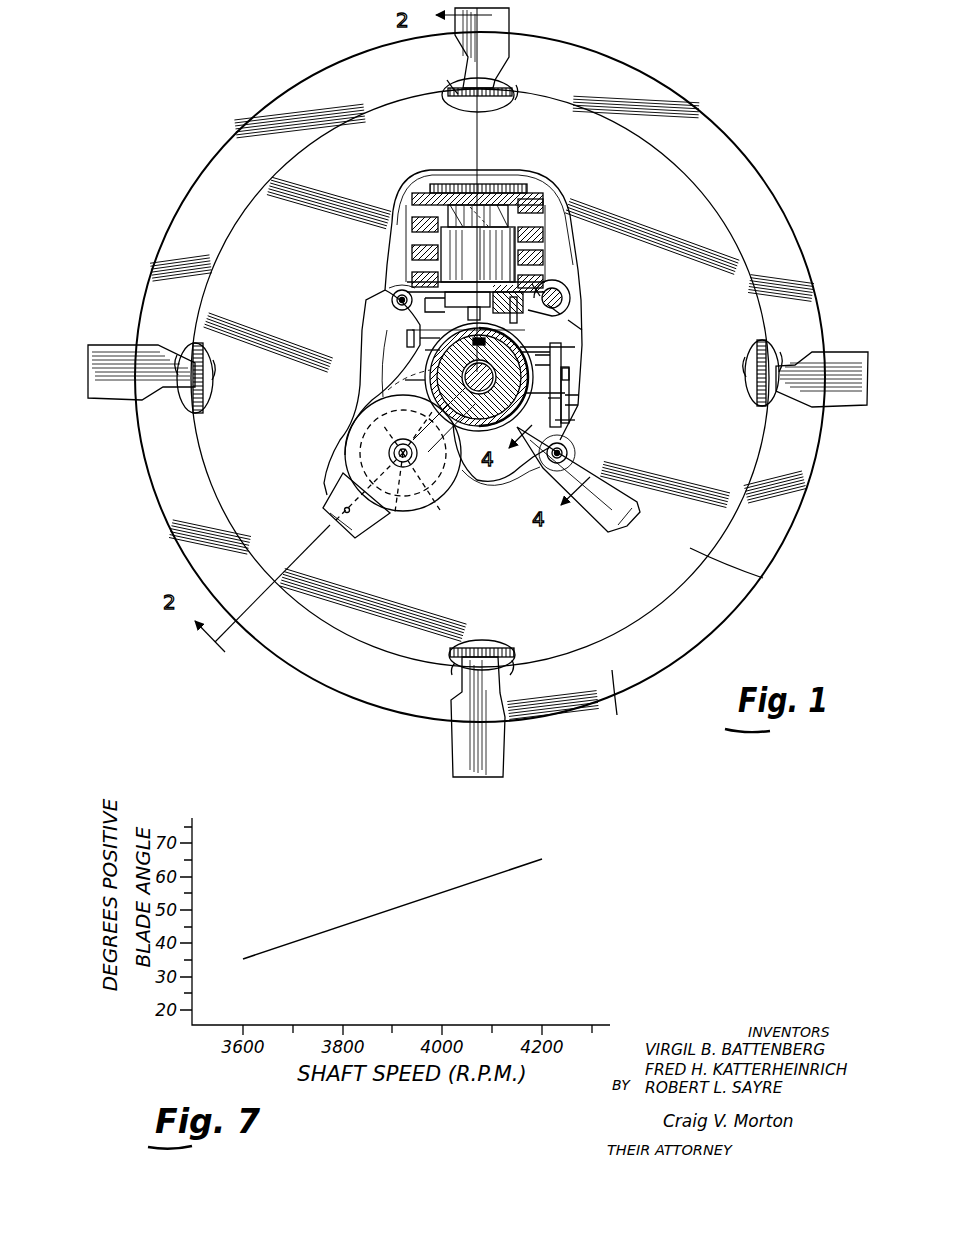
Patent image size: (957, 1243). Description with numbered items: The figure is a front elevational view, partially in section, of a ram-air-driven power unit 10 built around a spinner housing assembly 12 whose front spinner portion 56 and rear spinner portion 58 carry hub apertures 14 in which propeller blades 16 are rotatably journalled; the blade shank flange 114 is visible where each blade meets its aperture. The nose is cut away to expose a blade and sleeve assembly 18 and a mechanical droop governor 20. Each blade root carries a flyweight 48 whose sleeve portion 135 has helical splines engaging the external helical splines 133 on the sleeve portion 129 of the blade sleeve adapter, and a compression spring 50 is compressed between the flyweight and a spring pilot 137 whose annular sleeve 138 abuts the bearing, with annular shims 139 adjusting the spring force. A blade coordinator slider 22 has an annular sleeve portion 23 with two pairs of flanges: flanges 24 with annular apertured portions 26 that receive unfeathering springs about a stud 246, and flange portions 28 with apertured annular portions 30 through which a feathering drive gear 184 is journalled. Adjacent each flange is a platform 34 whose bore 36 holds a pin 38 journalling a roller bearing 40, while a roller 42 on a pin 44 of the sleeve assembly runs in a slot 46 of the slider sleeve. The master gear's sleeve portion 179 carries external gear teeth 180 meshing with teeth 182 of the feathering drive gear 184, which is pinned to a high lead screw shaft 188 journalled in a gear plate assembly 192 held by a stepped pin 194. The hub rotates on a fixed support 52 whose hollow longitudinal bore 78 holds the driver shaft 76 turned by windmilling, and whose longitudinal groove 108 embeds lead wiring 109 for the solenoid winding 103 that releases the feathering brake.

The ram-air-driven power unit 10 is at (268, 97).
The spinner housing assembly 12 is at (763, 235).
The hub apertures 14 is at (450, 80).
The propeller blades 16 is at (500, 25).
The blade shank flange 114 is at (500, 100).
The blade and sleeve assembly 18 is at (515, 176).
The mechanical droop governor 20 is at (515, 240).
The blade coordinator slider 22 is at (370, 405).
The annular sleeve portion 23 is at (545, 347).
The flanges 24 is at (400, 318).
The annular apertured portion 26 is at (393, 296).
The stud 246 is at (393, 302).
The flange portions 28 is at (435, 480).
The apertured annular portions 30 is at (562, 289).
The platform 34 is at (405, 381).
The bore 36 is at (506, 292).
The pin 38 is at (422, 354).
The roller bearing 40 is at (420, 340).
The roller 42 is at (470, 296).
The pin 44 is at (614, 406).
The slot 46 is at (406, 336).
The flyweight 48 is at (408, 265).
The compression spring 50 is at (415, 218).
The fixed support 52 is at (569, 378).
The front spinner portion 56 is at (737, 569).
The rear spinner portion 58 is at (616, 705).
The driver shaft 76 is at (479, 377).
The hollow longitudinal bore 78 is at (425, 438).
The solenoid winding 103 is at (462, 360).
The longitudinal groove 108 is at (561, 360).
The lead wiring 109 is at (552, 349).
The sleeve portion 129 is at (484, 200).
The external helical splines 133 is at (478, 195).
The sleeve portion 135 is at (568, 358).
The spring pilot 137 is at (421, 180).
The annular sleeve 138 is at (456, 192).
The annular shims 139 is at (408, 185).
The sleeve portion 179 is at (477, 428).
The external gear teeth 180 is at (388, 466).
The teeth 182 is at (394, 411).
The feathering drive gear 184 is at (402, 497).
The high lead screw shaft 188 is at (560, 296).
The gear plate assembly 192 is at (342, 498).
The stepped pin 194 is at (348, 533).